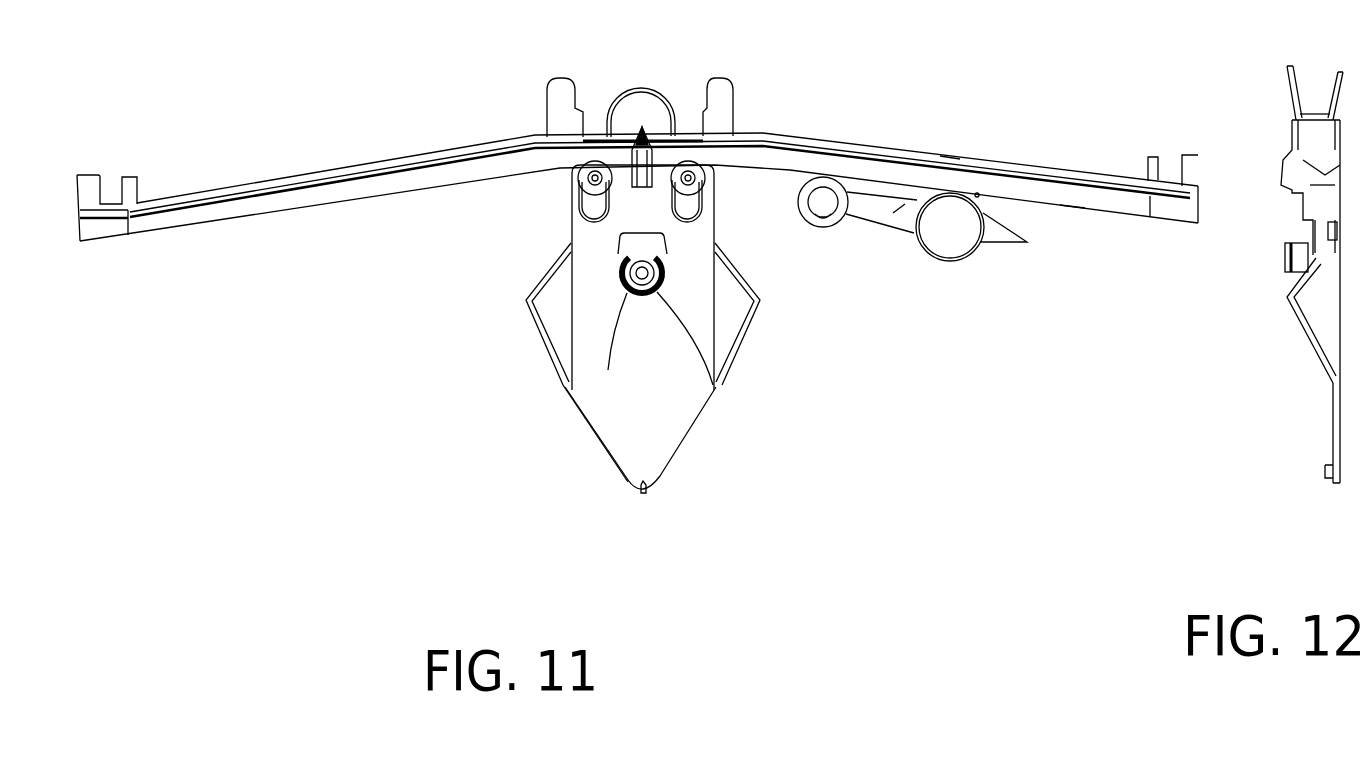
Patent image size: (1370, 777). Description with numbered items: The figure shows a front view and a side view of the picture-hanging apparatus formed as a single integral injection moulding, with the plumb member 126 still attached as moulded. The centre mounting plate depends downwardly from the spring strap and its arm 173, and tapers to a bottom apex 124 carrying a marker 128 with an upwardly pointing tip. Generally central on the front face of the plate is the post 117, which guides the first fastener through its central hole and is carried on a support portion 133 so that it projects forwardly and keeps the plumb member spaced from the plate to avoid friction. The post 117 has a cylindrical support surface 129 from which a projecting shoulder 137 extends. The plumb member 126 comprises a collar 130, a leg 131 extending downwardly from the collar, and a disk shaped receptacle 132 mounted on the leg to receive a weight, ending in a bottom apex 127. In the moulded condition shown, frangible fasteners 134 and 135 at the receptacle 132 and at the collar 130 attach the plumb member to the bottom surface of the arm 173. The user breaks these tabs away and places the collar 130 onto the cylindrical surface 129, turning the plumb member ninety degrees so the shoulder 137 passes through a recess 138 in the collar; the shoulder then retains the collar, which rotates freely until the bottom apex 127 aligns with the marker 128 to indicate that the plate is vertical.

In FIG. 11, the post 117 is at (713, 385).
In FIG. 12, the post 117 is at (1287, 273).
In FIG. 11, the bottom apex 124 is at (628, 478).
In FIG. 11, the plumb member 126 is at (895, 255).
In FIG. 11, the bottom apex of the plumb member 127 is at (1027, 242).
In FIG. 11, the marker 128 is at (647, 490).
In FIG. 11, the cylindrical support surface 129 is at (668, 256).
In FIG. 12, the cylindrical support surface 129 is at (1298, 243).
In FIG. 11, the collar 130 is at (838, 220).
In FIG. 11, the leg 131 is at (893, 213).
In FIG. 11, the disk shaped receptacle 132 is at (953, 262).
In FIG. 11, the support portion 133 is at (618, 347).
In FIG. 11, the frangible fastener 134 is at (977, 193).
In FIG. 11, the frangible fastener 135 is at (827, 177).
In FIG. 11, the projecting shoulder 137 is at (622, 234).
In FIG. 11, the recess 138 is at (825, 228).
In FIG. 11, the arm 173 is at (950, 158).